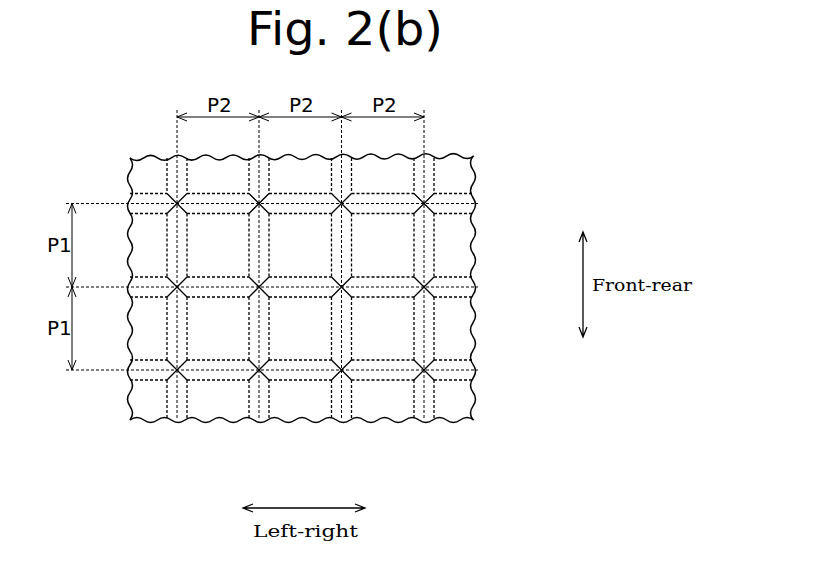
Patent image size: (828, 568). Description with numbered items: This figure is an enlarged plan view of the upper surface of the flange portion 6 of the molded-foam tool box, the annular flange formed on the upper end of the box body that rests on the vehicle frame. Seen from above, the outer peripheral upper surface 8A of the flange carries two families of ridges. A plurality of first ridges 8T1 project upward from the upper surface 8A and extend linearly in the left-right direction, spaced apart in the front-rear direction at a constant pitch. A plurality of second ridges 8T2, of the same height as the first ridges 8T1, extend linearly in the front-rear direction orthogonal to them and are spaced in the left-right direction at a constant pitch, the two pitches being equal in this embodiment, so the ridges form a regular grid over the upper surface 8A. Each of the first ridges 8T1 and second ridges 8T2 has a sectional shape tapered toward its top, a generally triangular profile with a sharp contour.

The upper surface 8A is at (146, 169).
The flange portion 6 is at (456, 155).
The first ridges 8T1 is at (454, 207).
The second ridges 8T2 is at (252, 407).